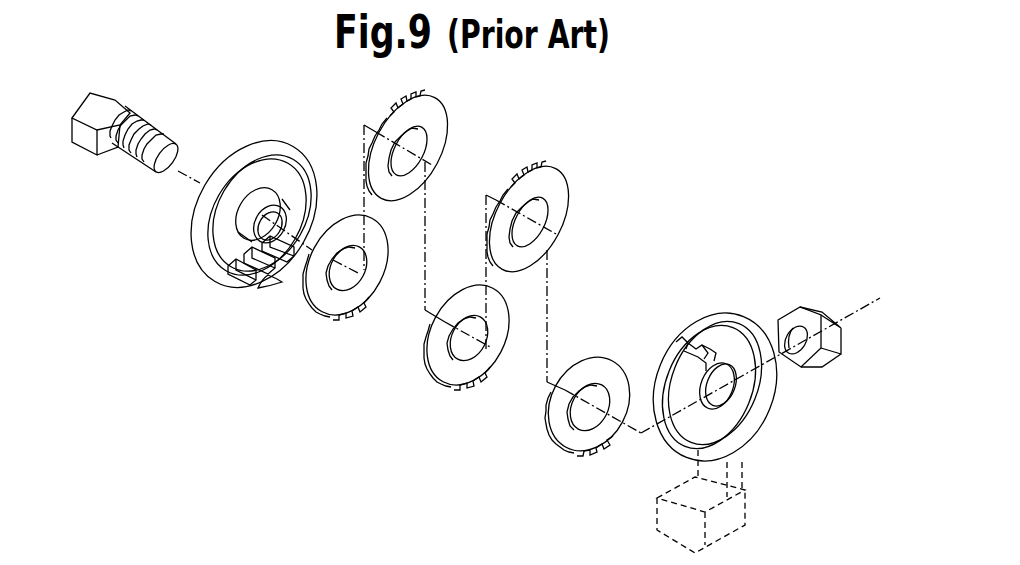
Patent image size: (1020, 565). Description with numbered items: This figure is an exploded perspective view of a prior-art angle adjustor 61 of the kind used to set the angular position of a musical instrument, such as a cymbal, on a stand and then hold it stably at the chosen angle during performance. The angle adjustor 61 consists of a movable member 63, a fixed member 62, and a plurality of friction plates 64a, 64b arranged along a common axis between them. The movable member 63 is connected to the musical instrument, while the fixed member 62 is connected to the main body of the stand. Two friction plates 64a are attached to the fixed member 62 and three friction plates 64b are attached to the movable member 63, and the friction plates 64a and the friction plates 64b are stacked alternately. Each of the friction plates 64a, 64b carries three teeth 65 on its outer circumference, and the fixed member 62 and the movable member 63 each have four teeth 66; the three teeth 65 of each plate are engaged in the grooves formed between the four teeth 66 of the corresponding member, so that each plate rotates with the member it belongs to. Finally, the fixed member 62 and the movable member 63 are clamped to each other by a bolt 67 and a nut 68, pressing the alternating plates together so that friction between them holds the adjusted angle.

The angle adjustor 61 is at (737, 160).
The fixed member 62 is at (777, 419).
The movable member 63 is at (266, 144).
The friction plates 64a is at (444, 131).
The friction plates 64b is at (322, 313).
The teeth 65 is at (425, 95).
The teeth 66 is at (272, 282).
The bolt 67 is at (148, 138).
The nut 68 is at (814, 316).